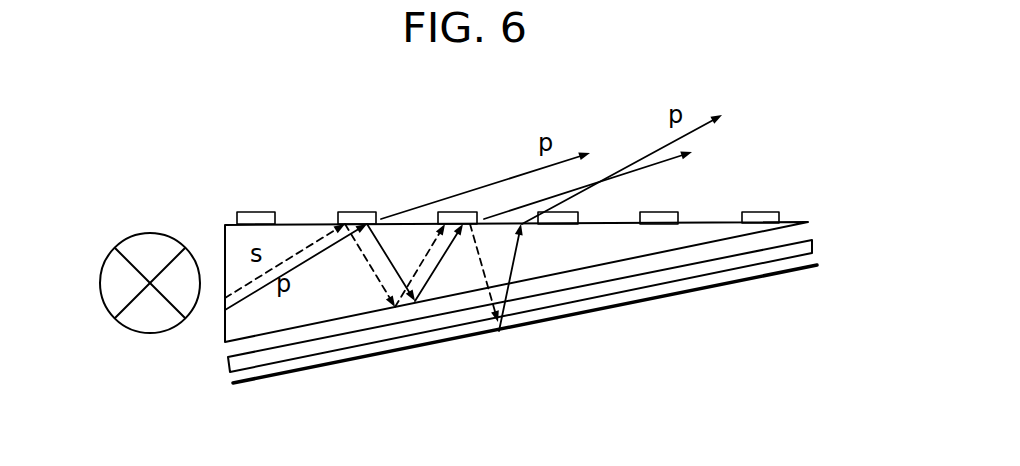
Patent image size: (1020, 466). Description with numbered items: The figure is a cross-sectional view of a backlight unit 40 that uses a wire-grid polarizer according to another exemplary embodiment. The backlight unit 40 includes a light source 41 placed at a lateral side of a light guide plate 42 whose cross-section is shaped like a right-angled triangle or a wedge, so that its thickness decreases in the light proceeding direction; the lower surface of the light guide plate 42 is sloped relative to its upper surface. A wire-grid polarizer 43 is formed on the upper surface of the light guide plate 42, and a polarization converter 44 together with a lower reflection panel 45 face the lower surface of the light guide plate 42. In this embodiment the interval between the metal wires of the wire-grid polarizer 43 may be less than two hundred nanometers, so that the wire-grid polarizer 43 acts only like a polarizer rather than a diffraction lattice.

The backlight unit 40 is at (522, 288).
The light source 41 is at (100, 283).
The light guide plate 42 is at (237, 242).
The wire-grid polarizer 43 is at (760, 211).
The polarization converter 44 is at (813, 247).
The lower reflection panel 45 is at (787, 273).